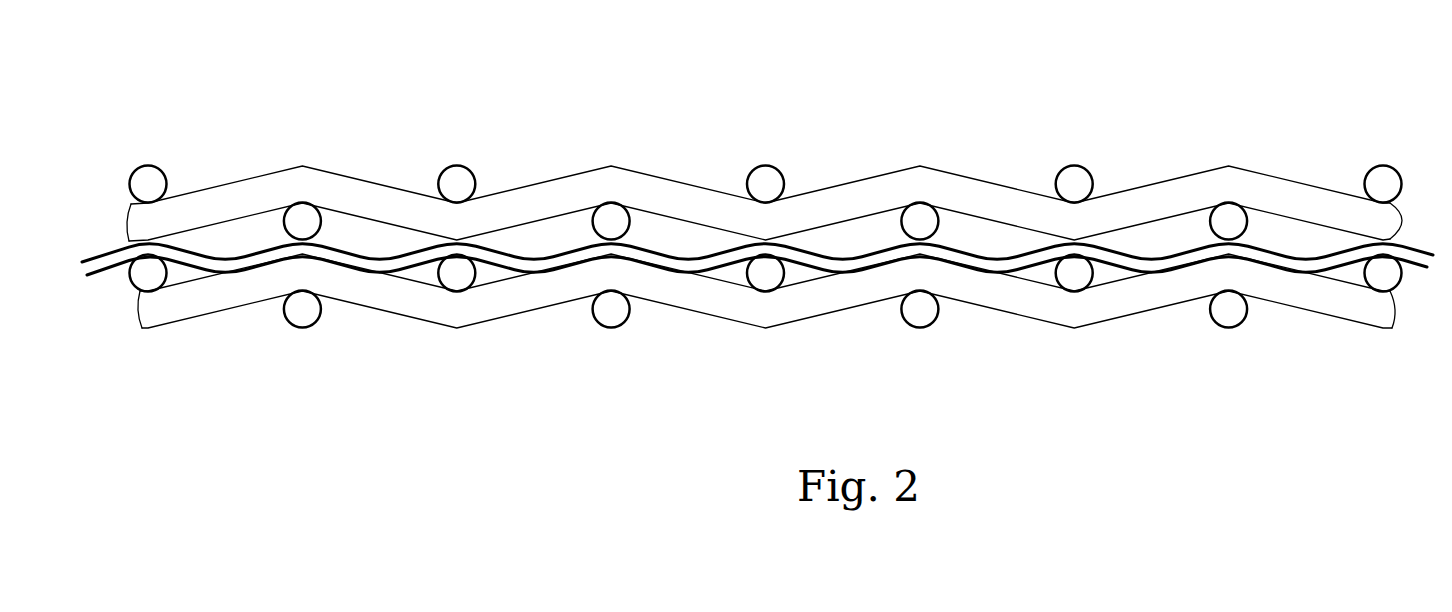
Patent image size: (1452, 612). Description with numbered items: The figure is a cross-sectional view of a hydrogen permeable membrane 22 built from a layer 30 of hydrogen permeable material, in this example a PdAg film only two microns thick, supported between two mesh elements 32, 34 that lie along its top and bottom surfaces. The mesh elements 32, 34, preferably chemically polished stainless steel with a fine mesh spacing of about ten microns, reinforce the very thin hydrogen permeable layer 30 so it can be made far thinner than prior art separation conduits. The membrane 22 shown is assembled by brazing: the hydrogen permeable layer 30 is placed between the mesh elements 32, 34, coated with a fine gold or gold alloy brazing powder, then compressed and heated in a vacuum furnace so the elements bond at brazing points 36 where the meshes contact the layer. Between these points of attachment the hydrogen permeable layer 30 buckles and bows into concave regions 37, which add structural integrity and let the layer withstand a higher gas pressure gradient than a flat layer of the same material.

The membrane 22 is at (757, 213).
The hydrogen permeable layer 30 is at (757, 314).
The mesh element 32 is at (910, 180).
The mesh element 34 is at (1082, 316).
The brazing points 36 is at (642, 236).
The concave regions 37 is at (1000, 274).